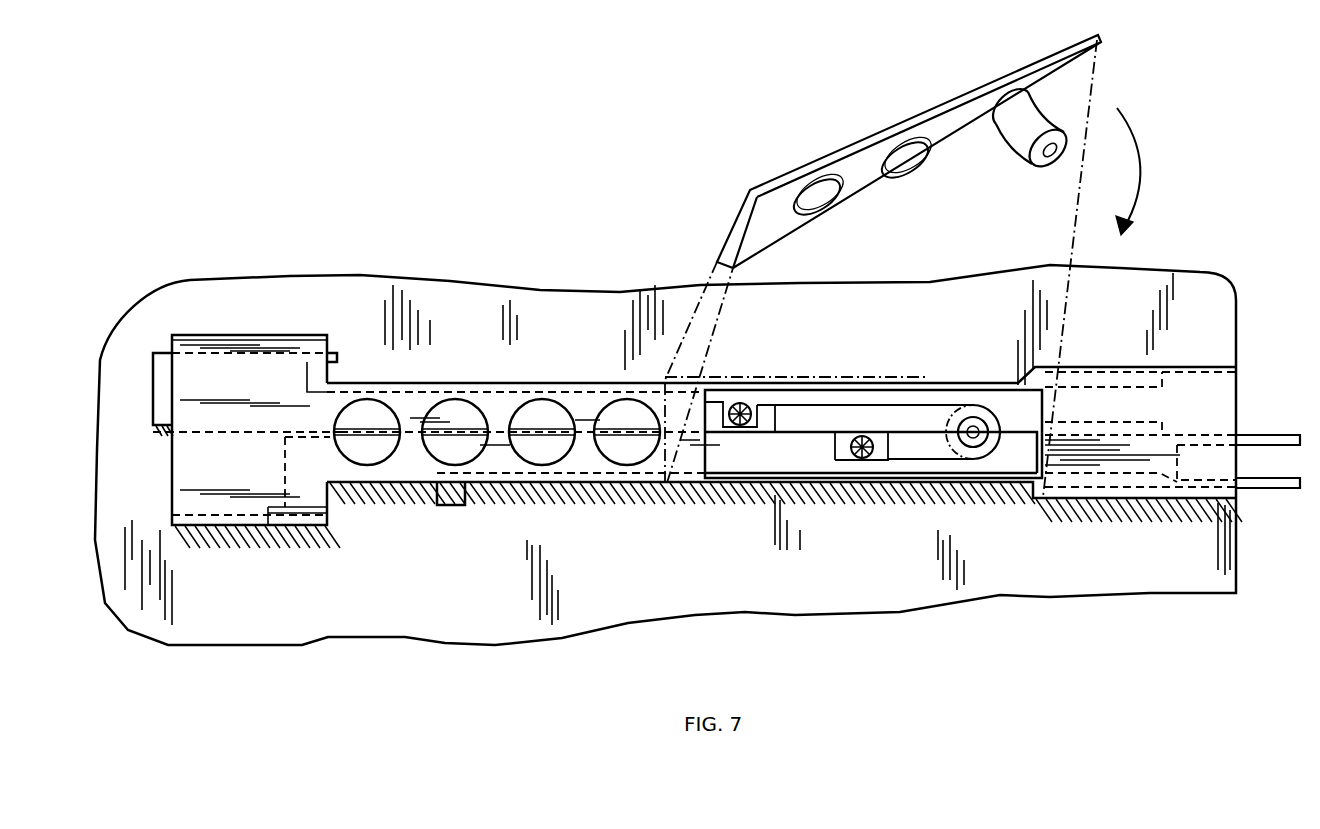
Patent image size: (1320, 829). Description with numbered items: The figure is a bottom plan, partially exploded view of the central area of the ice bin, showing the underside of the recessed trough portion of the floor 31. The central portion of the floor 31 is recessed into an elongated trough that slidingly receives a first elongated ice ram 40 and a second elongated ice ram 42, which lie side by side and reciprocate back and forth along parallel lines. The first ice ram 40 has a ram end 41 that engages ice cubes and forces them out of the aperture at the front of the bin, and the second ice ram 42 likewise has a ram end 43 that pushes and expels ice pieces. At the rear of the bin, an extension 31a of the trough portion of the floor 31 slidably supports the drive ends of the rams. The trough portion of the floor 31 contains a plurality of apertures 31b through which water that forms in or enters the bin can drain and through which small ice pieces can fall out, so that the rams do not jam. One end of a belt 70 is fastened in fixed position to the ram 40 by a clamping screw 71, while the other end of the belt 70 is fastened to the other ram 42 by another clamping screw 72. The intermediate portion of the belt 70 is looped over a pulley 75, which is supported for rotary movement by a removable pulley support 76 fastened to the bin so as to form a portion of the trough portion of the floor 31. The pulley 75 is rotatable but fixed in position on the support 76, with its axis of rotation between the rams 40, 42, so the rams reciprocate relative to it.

The floor 31 is at (702, 592).
The extension 31a is at (1178, 505).
The apertures 31b is at (470, 462).
The first elongated ice ram 40 is at (807, 460).
The ram end 41 is at (285, 482).
The second elongated ice ram 42 is at (815, 418).
The ram end 43 is at (150, 392).
The belt 70 is at (890, 405).
The clamping screw 71 is at (883, 462).
The clamping screw 72 is at (742, 402).
The pulley 75 is at (1022, 160).
The pulley support 76 is at (777, 193).